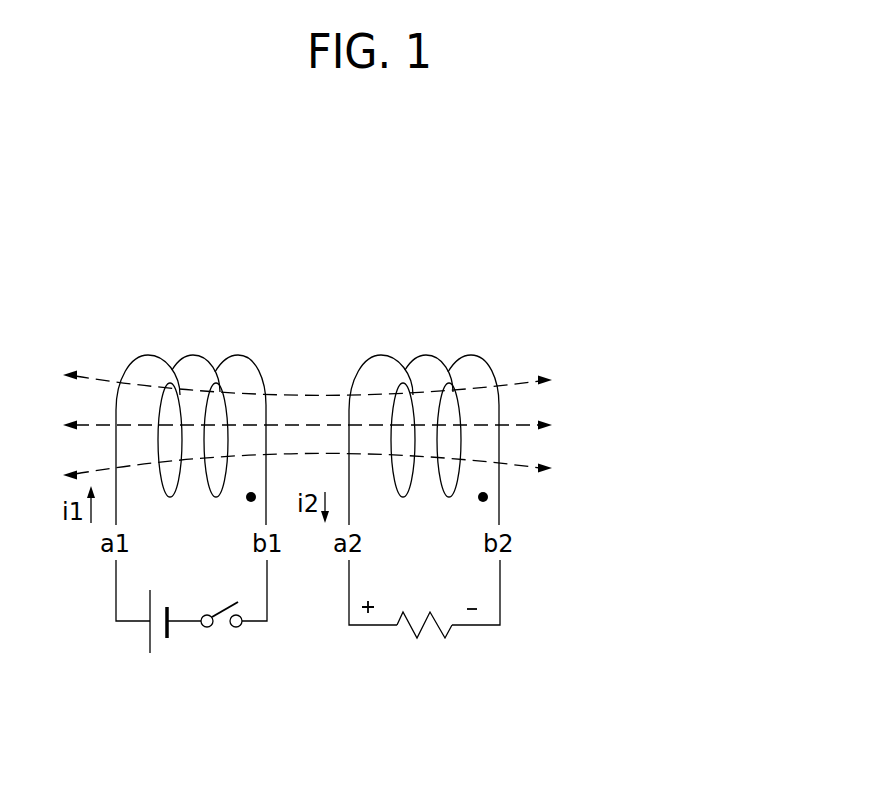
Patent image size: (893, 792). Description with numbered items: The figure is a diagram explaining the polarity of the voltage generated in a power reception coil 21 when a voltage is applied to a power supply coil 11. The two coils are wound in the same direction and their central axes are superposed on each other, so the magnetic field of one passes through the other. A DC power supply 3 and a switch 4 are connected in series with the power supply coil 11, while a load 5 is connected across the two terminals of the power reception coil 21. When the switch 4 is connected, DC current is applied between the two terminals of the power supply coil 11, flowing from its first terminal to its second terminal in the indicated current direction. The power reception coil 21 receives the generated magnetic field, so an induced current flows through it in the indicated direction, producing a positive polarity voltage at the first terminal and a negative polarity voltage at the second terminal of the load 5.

The power supply coil 11 is at (148, 353).
The power reception coil 21 is at (381, 353).
The DC power supply 3 is at (150, 651).
The switch 4 is at (237, 627).
The load 5 is at (445, 638).